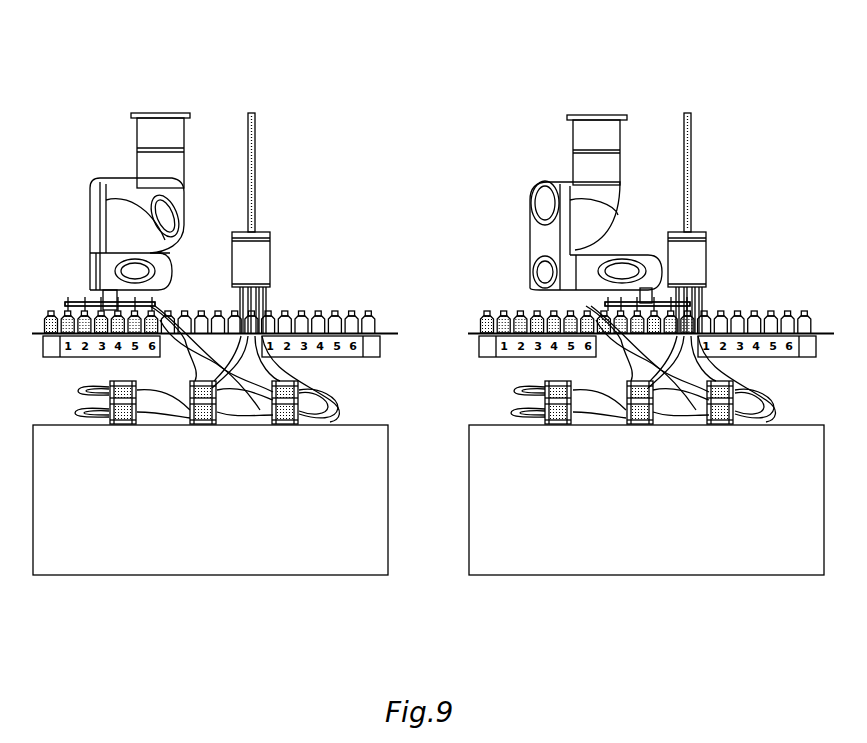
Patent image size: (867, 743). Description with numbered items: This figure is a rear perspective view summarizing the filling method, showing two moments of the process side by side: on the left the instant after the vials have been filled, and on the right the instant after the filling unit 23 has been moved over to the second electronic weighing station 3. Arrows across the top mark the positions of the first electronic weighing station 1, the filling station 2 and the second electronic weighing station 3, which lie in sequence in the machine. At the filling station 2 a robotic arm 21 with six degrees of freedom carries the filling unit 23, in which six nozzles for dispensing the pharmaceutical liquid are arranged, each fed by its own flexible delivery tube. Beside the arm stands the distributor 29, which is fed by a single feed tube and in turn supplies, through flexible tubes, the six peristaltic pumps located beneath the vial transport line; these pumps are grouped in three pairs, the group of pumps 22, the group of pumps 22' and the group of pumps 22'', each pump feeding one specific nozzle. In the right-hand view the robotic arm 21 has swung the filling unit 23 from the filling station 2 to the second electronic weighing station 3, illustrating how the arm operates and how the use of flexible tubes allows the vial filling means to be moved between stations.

The first electronic weighing station 1 is at (345, 96).
The filling station 2 is at (220, 96).
The second electronic weighing station 3 is at (45, 96).
The robotic arm 21 is at (103, 180).
The group of pumps 22 is at (502, 457).
The group of pumps 22' is at (421, 457).
The group of pumps 22'' is at (341, 457).
The filling unit 23 is at (75, 283).
The distributor 29 is at (262, 255).